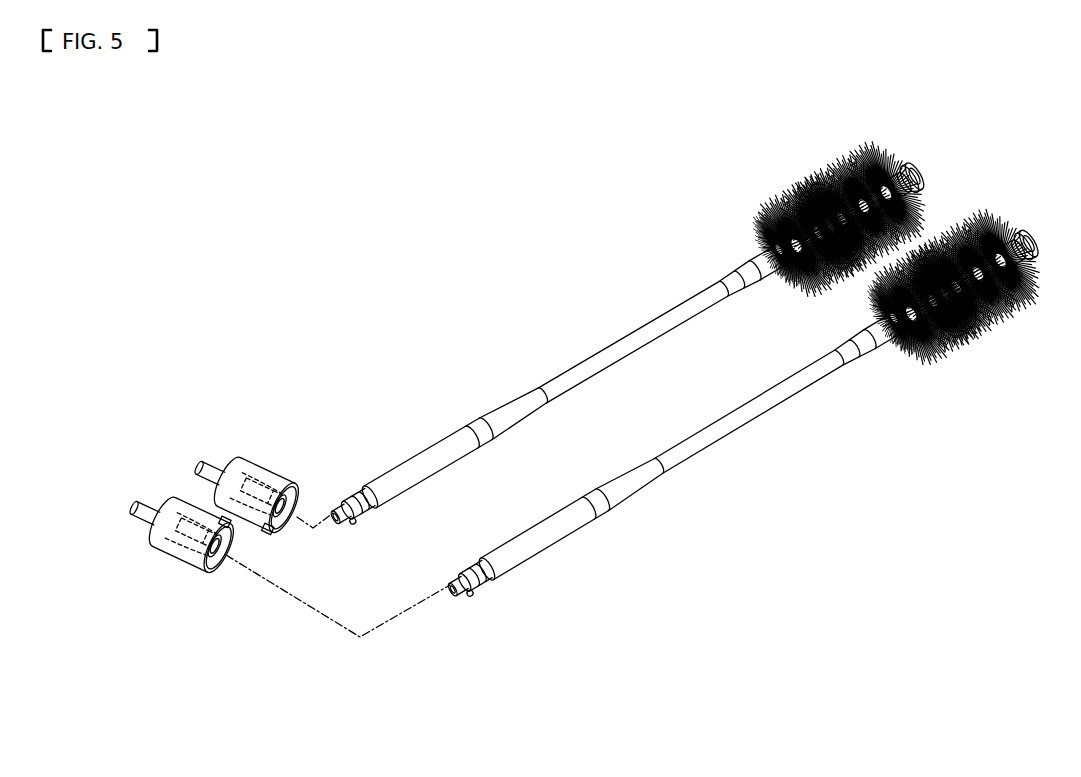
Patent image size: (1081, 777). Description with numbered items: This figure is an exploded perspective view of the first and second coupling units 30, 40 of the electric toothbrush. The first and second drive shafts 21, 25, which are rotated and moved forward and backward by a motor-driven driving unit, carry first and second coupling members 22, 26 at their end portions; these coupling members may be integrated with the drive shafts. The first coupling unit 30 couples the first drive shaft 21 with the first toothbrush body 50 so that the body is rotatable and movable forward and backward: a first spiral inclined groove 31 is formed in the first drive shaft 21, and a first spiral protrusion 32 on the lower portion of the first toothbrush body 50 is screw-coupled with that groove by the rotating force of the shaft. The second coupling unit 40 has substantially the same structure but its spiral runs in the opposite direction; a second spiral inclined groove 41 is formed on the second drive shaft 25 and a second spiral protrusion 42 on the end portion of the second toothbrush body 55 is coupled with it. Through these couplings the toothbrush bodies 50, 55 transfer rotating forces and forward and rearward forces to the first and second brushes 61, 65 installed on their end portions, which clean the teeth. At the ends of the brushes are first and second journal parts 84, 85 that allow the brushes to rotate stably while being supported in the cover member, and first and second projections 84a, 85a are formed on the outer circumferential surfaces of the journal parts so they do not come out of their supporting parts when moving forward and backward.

The first drive shaft 21 is at (217, 460).
The first coupling member 22 is at (271, 479).
The second drive shaft 25 is at (137, 511).
The second coupling member 26 is at (178, 556).
The first coupling unit 30 is at (338, 454).
The first spiral inclined groove 31 is at (299, 505).
The first spiral protrusion 32 is at (345, 503).
The second coupling unit 40 is at (297, 607).
The second spiral inclined groove 41 is at (230, 593).
The second spiral protrusion 42 is at (451, 614).
The first toothbrush body 50 is at (616, 354).
The second toothbrush body 55 is at (727, 421).
The first brush 61 is at (797, 196).
The second brush 65 is at (971, 349).
The first journal part 84 is at (915, 167).
The first projection 84a is at (926, 185).
The second journal part 85 is at (1028, 273).
The second projection 85a is at (1024, 246).